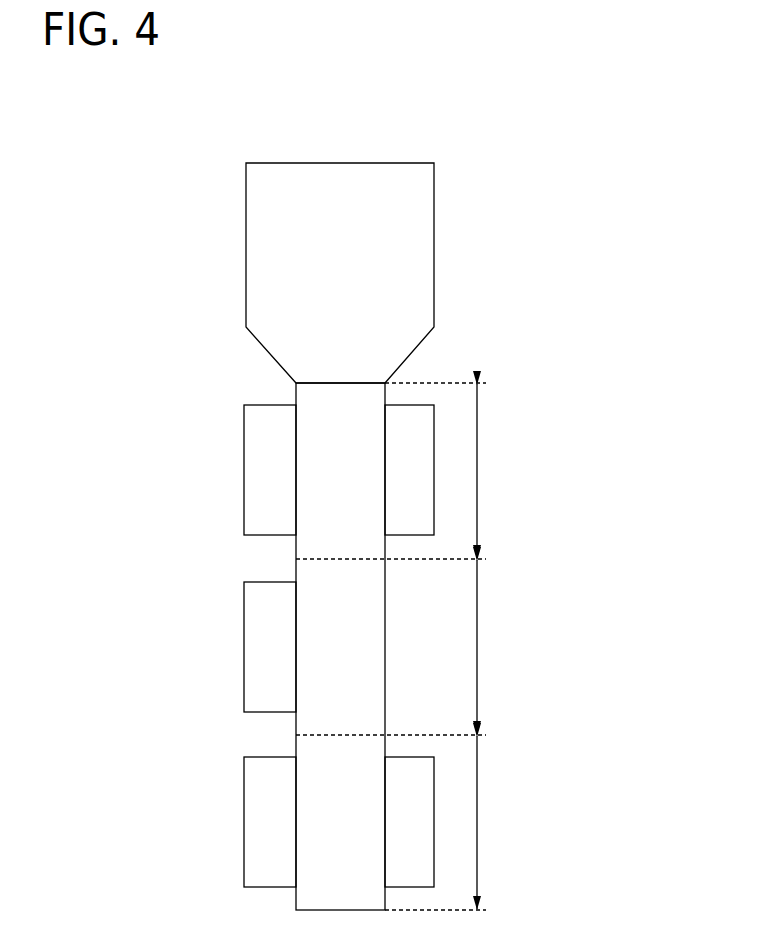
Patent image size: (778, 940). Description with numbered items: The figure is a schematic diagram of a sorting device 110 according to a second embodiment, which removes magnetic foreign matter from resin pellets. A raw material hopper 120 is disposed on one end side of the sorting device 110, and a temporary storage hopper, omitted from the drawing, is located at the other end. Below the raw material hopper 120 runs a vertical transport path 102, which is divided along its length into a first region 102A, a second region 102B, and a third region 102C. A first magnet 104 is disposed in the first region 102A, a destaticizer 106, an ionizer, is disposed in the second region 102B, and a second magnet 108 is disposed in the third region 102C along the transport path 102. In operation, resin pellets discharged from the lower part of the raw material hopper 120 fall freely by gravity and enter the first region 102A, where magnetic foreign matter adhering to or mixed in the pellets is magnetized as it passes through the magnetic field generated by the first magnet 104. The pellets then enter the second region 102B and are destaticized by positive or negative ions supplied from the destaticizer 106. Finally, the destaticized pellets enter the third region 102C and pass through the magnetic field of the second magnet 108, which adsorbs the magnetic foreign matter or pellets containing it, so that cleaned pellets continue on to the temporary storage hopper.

The sorting device 110 is at (600, 262).
The raw material hopper 120 is at (434, 231).
The transport path 102 is at (292, 389).
The first region 102A is at (419, 471).
The second region 102B is at (419, 647).
The third region 102C is at (463, 823).
The first magnet 104 is at (401, 491).
The destaticizer 106 is at (280, 648).
The second magnet 108 is at (401, 845).